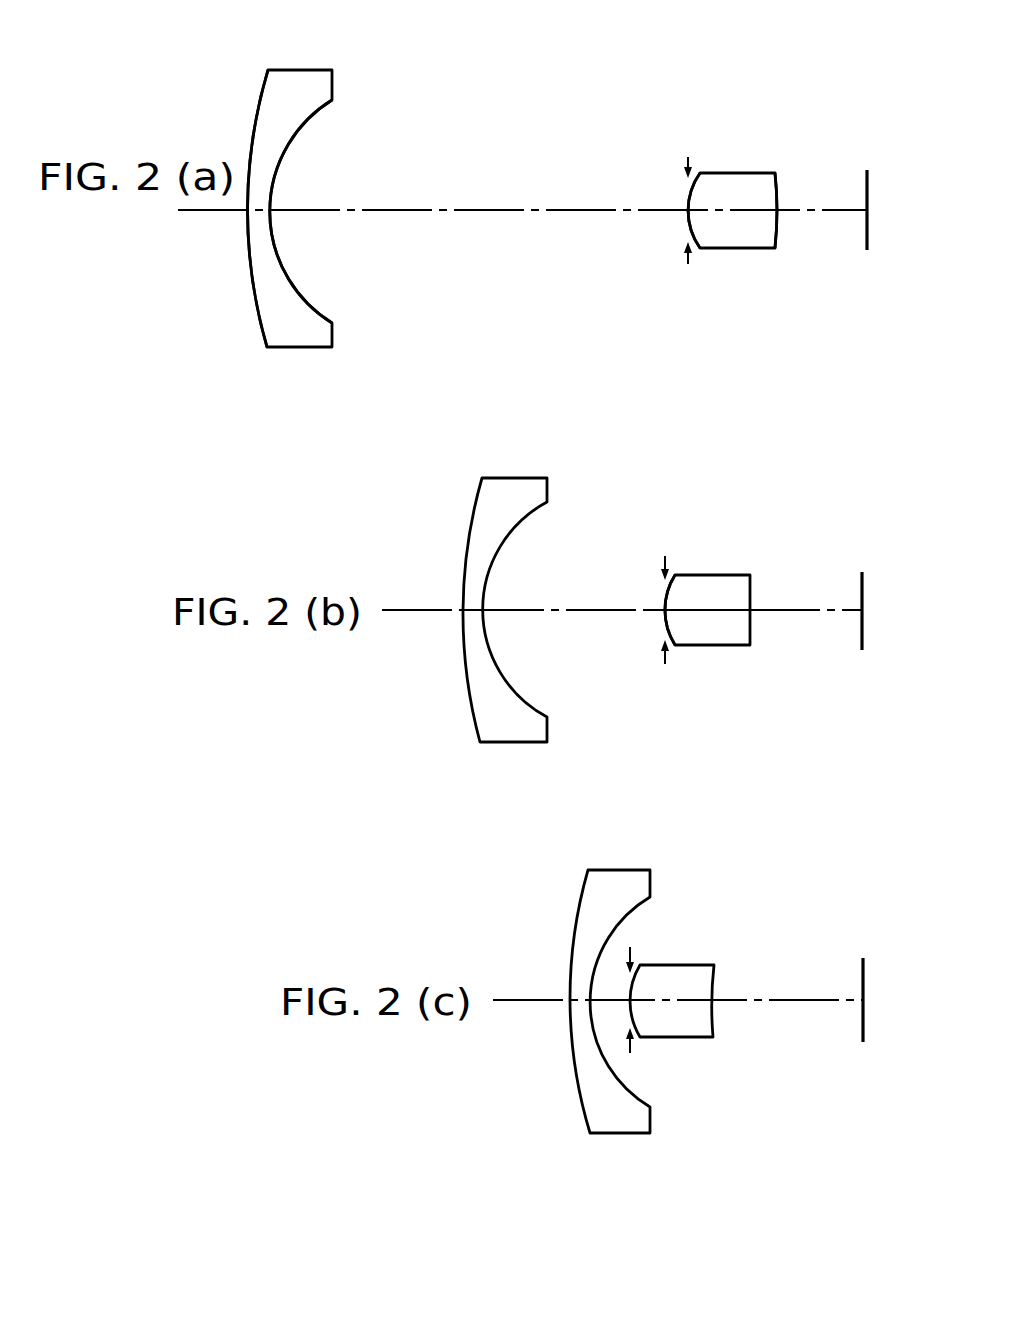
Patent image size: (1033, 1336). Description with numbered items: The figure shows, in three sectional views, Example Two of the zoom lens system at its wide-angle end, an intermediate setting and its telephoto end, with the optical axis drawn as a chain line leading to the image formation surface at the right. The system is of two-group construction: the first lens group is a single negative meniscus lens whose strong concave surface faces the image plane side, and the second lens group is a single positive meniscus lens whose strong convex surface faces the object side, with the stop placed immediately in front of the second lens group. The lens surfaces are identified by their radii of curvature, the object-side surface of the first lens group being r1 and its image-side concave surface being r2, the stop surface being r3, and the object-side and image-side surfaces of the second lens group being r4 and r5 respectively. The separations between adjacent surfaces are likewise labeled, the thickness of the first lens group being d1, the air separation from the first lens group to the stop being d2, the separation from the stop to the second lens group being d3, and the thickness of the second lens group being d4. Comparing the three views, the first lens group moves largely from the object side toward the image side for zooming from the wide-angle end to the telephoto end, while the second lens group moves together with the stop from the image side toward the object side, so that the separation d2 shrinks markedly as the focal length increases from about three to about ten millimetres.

The radius of curvature of lens surface r1 is at (258, 321).
The radius of curvature of lens surface r2 is at (318, 309).
The radius of curvature of lens surface r3 is at (690, 209).
The radius of curvature of lens surface r4 is at (690, 226).
The radius of curvature of lens surface r5 is at (774, 236).
The separation between adjacent lens surfaces d1 is at (480, 611).
The separation between adjacent lens surfaces d2 is at (568, 608).
The separation between adjacent lens surfaces d3 is at (668, 607).
The separation between adjacent lens surfaces d4 is at (712, 612).